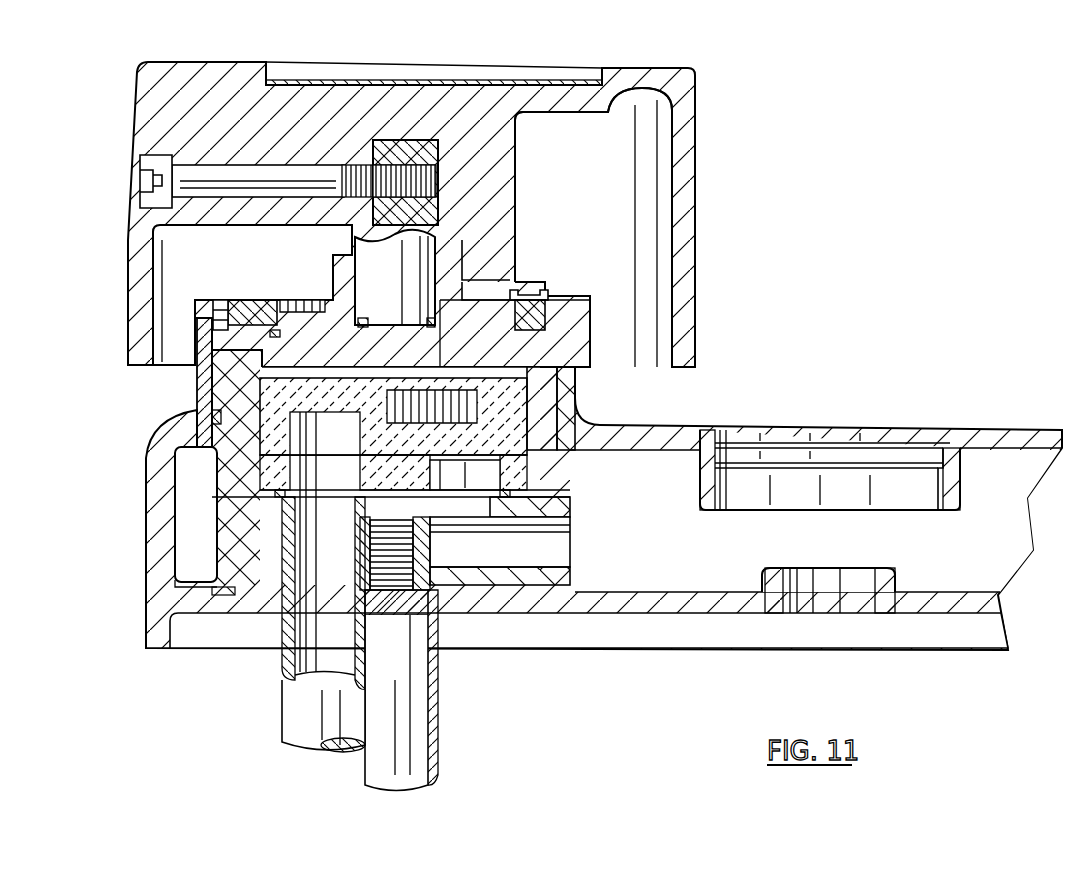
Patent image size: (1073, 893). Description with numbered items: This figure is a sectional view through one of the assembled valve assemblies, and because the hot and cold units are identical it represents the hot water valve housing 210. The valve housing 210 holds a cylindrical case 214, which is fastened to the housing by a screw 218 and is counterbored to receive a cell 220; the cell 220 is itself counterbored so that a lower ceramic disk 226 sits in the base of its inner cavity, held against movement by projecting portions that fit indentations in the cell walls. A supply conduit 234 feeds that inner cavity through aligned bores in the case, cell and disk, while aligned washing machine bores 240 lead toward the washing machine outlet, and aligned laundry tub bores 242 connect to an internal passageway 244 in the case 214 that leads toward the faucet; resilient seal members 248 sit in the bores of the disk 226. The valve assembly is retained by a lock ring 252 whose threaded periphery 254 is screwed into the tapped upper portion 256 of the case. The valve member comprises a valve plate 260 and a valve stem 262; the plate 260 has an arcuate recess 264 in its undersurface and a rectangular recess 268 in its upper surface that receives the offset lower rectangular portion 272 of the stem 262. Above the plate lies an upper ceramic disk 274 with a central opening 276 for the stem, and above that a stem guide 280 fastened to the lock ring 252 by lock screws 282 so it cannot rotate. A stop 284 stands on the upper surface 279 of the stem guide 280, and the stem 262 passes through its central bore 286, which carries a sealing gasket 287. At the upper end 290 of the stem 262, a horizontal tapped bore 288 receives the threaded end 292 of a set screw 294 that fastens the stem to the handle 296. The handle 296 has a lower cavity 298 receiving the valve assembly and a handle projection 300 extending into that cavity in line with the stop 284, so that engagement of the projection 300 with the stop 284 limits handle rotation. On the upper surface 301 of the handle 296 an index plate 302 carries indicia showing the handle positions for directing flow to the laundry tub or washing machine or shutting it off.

The valve housing 210 is at (145, 532).
The cylindrical case 214 is at (565, 506).
The screw 218 is at (395, 600).
The cell 220 is at (154, 441).
The lower ceramic disk 226 is at (490, 478).
The supply conduit 234 is at (282, 696).
The washing machine bores 240 is at (318, 466).
The laundry tub bores 242 is at (505, 490).
The internal passageway 244 is at (540, 555).
The resilient seal members 248 is at (360, 510).
The lock ring 252 is at (250, 300).
The periphery 254 is at (212, 305).
The tapped upper portion 256 is at (593, 227).
The valve plate 260 is at (265, 410).
The valve stem 262 is at (345, 280).
The arcuate recess 264 is at (245, 445).
The rectangular recess 268 is at (520, 398).
The offset lower rectangular portion 272 is at (425, 385).
The upper ceramic disk 274 is at (540, 378).
The opening 276 is at (342, 378).
The upper surface 279 is at (486, 240).
The stem guide 280 is at (197, 370).
The lock screws 282 is at (545, 292).
The stop 284 is at (550, 240).
The central bore 286 is at (498, 322).
The sealing gasket 287 is at (380, 323).
The horizontal tapped bore 288 is at (442, 158).
The upper end 290 is at (392, 142).
The threaded end 292 is at (338, 226).
The set screw 294 is at (243, 200).
The handle 296 is at (126, 72).
The lower cavity 298 is at (645, 135).
The handle projection 300 is at (527, 262).
The upper surface 301 is at (672, 68).
The index plate 302 is at (302, 64).